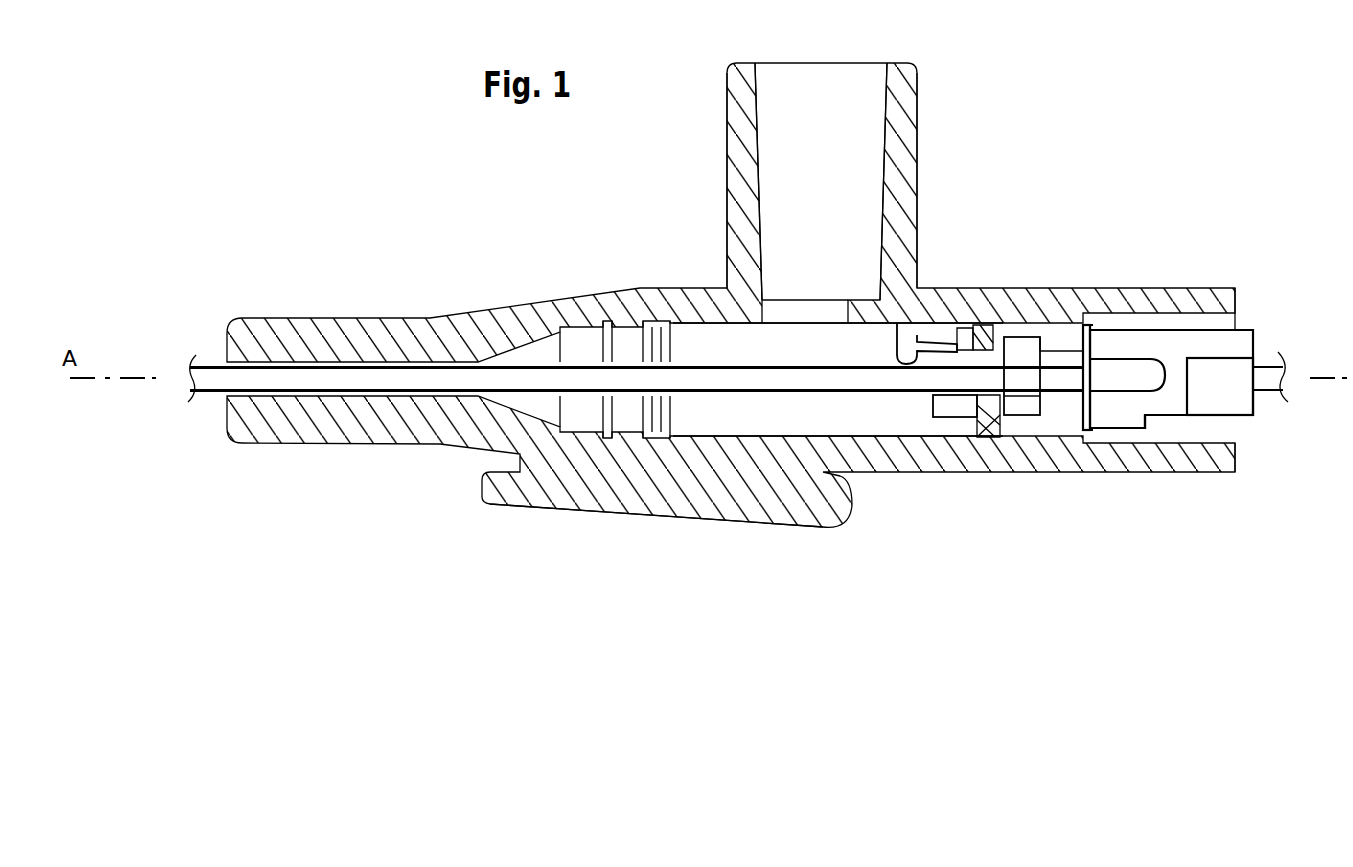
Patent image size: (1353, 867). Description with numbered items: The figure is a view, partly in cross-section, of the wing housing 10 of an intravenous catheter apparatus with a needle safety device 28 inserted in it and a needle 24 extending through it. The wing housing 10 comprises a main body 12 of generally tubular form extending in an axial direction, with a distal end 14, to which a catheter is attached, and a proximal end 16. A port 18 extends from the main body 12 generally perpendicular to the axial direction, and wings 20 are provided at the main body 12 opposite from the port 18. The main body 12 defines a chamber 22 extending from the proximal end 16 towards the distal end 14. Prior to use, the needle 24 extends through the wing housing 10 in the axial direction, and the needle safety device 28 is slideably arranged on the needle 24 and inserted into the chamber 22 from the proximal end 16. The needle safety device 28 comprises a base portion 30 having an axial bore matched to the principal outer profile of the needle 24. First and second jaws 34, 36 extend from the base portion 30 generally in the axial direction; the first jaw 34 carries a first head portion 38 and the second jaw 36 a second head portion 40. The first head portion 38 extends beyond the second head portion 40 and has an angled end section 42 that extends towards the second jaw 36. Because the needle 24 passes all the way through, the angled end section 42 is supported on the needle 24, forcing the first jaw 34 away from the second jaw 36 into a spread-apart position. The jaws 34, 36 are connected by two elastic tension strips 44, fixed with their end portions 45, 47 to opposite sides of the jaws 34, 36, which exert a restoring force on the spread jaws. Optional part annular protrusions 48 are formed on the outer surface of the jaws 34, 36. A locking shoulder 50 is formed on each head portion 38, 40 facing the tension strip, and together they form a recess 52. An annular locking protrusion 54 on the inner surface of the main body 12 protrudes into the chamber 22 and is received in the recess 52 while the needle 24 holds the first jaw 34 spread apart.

The wing housing 10 is at (552, 294).
The main body 12 is at (905, 470).
The distal end 14 is at (222, 353).
The proximal end 16 is at (1240, 456).
The port 18 is at (735, 104).
The wings 20 is at (518, 496).
The chamber 22 is at (838, 379).
The needle 24 is at (643, 382).
The needle safety device 28 is at (1216, 325).
The base portion 30 is at (1255, 342).
The first jaw 34 is at (1160, 342).
The second jaw 36 is at (1120, 430).
The first head portion 38 is at (918, 330).
The second head portion 40 is at (945, 416).
The angled end section 42 is at (897, 336).
The tension strips 44 is at (1035, 416).
The end portion 45 is at (1042, 337).
The end portion 47 is at (1025, 420).
The part annular protrusions 48 is at (1090, 328).
The locking shoulder 50 is at (975, 325).
The recess 52 is at (998, 327).
The annular locking protrusion 54 is at (985, 325).